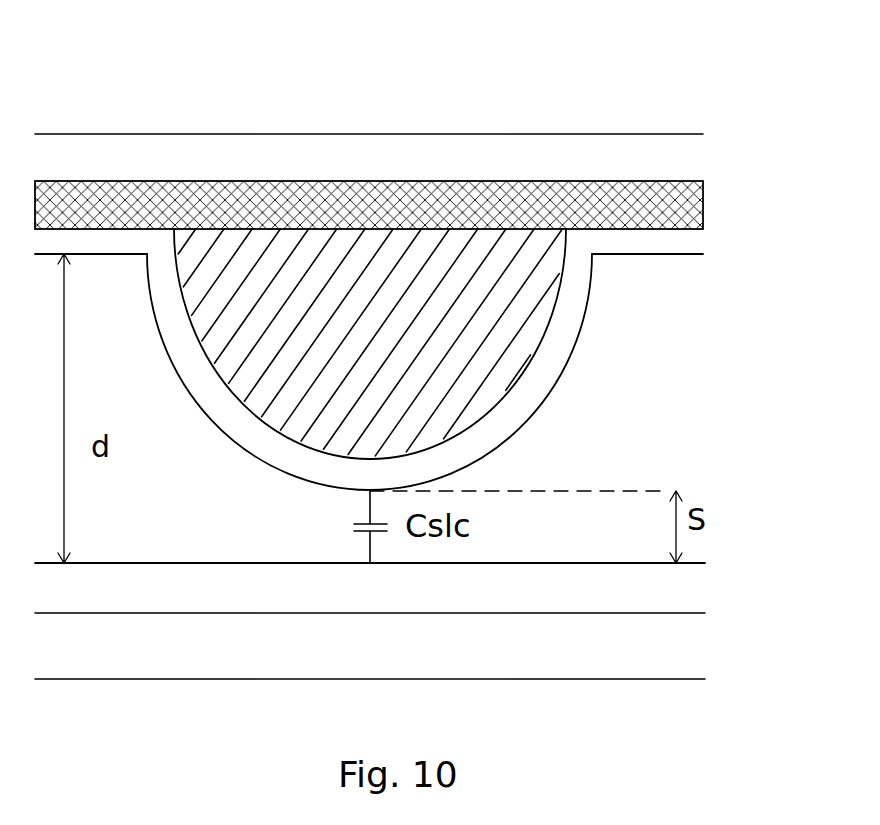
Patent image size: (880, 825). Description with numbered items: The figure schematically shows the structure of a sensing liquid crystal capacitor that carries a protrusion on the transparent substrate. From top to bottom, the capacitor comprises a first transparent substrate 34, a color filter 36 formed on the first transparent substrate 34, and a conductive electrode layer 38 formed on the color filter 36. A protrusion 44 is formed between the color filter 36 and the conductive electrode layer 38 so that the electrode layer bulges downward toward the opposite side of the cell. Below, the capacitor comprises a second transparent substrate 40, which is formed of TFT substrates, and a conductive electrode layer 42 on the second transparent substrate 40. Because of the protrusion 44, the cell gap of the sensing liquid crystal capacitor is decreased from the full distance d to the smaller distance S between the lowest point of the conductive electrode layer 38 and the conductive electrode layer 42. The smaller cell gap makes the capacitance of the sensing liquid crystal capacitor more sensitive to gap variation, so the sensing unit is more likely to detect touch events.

The first transparent substrate 34 is at (119, 158).
The color filter 36 is at (558, 212).
The conductive electrode layer 38 is at (665, 238).
The second transparent substrate 40 is at (675, 660).
The conductive electrode layer 42 is at (675, 597).
The protrusion 44 is at (353, 295).